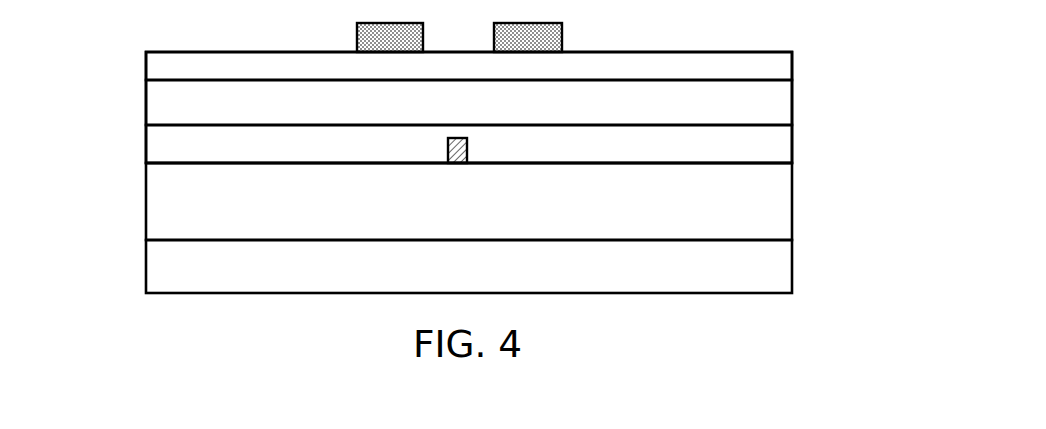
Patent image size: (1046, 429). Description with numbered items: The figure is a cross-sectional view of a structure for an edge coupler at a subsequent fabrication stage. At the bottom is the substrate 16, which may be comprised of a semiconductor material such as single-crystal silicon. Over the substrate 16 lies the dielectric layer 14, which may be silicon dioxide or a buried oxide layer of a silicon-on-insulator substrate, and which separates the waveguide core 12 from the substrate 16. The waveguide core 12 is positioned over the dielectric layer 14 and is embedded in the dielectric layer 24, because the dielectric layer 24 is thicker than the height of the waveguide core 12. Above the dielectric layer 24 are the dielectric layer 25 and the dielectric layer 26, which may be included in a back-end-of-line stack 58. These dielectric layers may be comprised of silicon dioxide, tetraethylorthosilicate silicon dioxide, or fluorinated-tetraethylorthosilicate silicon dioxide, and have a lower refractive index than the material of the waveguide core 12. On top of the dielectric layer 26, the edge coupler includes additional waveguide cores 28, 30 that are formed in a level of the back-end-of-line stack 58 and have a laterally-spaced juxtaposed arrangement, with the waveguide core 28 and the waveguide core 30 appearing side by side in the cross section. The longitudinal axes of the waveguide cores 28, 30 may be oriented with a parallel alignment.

The waveguide core 12 is at (458, 150).
The dielectric layer 14 is at (740, 201).
The substrate 16 is at (748, 272).
The dielectric layer 24 is at (196, 150).
The dielectric layer 25 is at (186, 104).
The dielectric layer 26 is at (186, 70).
The waveguide core 28 is at (375, 38).
The waveguide core 30 is at (532, 36).
The back-end-of-line stack 58 is at (805, 52).